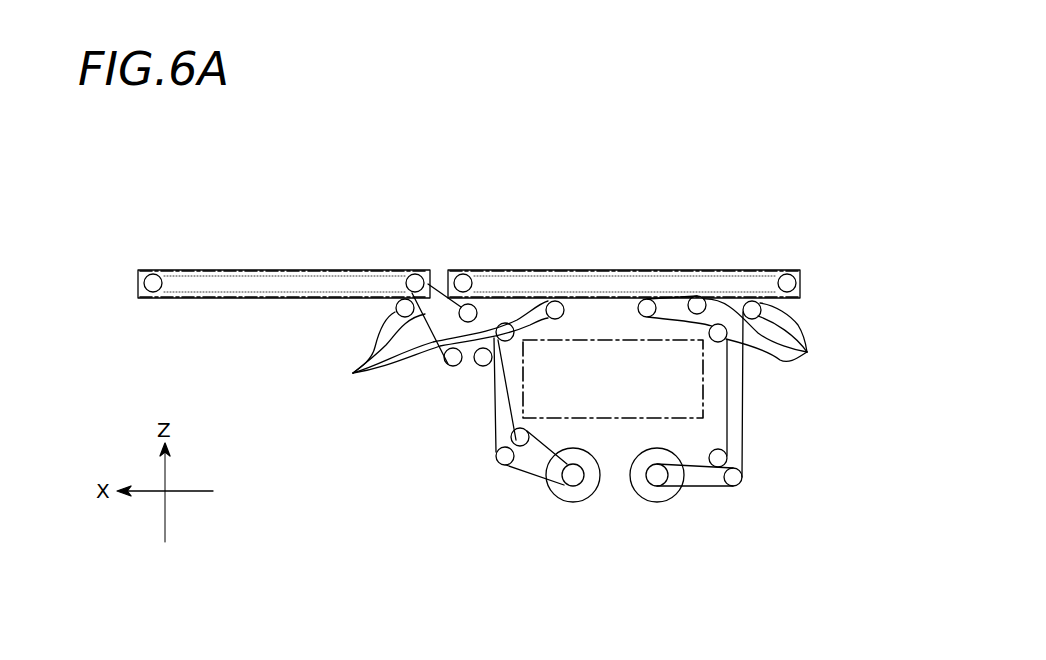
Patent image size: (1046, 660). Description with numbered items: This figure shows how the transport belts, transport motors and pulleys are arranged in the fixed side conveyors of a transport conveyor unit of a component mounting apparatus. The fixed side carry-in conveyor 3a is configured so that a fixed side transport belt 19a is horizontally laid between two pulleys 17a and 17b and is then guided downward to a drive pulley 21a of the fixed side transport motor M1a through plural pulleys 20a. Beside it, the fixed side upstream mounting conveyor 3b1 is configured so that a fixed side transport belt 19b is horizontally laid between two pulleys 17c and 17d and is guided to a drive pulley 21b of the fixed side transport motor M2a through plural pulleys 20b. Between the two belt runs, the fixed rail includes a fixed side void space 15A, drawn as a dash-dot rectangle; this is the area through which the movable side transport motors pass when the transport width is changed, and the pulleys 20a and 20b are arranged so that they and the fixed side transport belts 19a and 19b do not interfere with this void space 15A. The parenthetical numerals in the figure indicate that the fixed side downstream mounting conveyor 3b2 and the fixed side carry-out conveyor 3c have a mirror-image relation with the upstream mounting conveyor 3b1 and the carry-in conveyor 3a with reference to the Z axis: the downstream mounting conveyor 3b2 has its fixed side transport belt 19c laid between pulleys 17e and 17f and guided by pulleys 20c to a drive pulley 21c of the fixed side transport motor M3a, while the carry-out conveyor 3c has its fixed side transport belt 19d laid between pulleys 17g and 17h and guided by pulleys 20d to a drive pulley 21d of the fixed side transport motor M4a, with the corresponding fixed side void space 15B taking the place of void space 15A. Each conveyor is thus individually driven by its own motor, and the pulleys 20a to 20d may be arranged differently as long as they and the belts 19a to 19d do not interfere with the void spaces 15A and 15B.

The fixed side carry-in conveyor 3a is at (624, 212).
The fixed side carry-out conveyor 3c is at (723, 270).
The fixed side upstream mounting conveyor 3b1 is at (284, 211).
The fixed side downstream mounting conveyor 3b2 is at (220, 270).
The fixed side void space 15A is at (613, 290).
The fixed side void space 15B is at (595, 340).
The pulley 17a is at (804, 231).
The pulley 17b is at (479, 221).
The pulley 17c is at (397, 222).
The pulley 17d is at (134, 230).
The pulley 17e is at (151, 280).
The pulley 17f is at (414, 280).
The pulley 17g is at (465, 280).
The pulley 17h is at (789, 280).
The fixed side transport belt 19a is at (624, 234).
The fixed side transport belt 19b is at (284, 233).
The fixed side transport belt 19c is at (285, 270).
The fixed side transport belt 19d is at (657, 270).
The pulleys 20a is at (750, 391).
The pulleys 20b is at (423, 374).
The pulleys 20c is at (512, 437).
The pulleys 20d is at (735, 475).
The drive pulley 21a is at (727, 518).
The drive pulley 21b is at (498, 502).
The drive pulley 21c is at (548, 483).
The drive pulley 21d is at (690, 486).
The fixed side transport motor M1a is at (669, 521).
The fixed side transport motor M2a is at (557, 521).
The fixed side transport motor M3a is at (565, 501).
The fixed side transport motor M4a is at (665, 501).